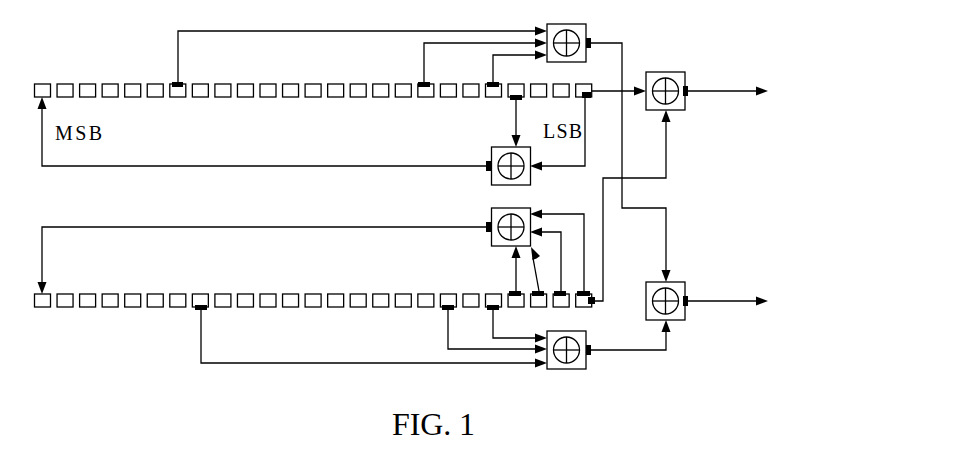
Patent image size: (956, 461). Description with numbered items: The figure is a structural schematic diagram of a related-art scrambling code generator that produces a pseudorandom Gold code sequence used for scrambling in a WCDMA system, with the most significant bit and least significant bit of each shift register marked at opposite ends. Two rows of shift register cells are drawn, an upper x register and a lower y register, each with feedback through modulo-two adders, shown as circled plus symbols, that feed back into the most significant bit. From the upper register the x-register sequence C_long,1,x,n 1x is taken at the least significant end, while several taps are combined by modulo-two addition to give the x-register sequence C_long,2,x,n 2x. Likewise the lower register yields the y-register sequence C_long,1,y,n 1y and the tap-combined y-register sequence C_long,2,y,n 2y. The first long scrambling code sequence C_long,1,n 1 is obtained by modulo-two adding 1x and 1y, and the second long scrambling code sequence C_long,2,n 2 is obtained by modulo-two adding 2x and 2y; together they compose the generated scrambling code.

The first long scrambling code sequence C_long,1,n 1 is at (743, 72).
The second long scrambling code sequence C_long,2,n 2 is at (742, 280).
The x-register sequence C_long,1,x,n 1x is at (611, 84).
The x-register sequence C_long,2,x,n 2x is at (609, 151).
The y-register sequence C_long,1,y,n 1y is at (632, 205).
The y-register sequence C_long,2,y,n 2y is at (609, 344).